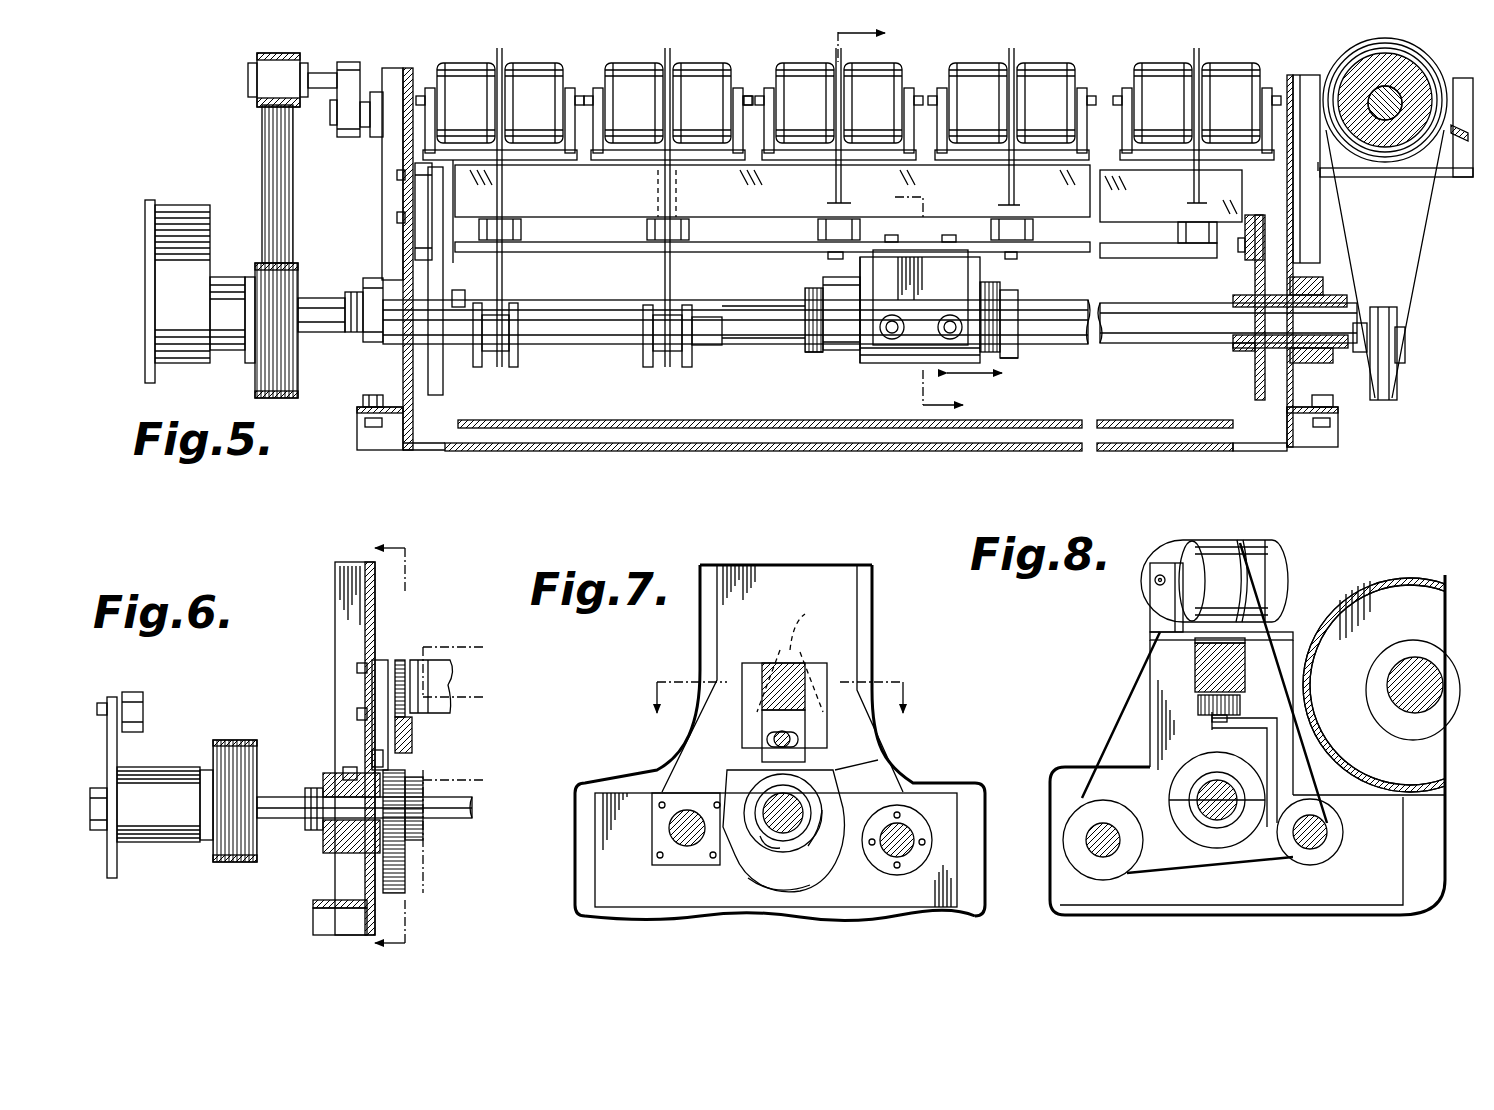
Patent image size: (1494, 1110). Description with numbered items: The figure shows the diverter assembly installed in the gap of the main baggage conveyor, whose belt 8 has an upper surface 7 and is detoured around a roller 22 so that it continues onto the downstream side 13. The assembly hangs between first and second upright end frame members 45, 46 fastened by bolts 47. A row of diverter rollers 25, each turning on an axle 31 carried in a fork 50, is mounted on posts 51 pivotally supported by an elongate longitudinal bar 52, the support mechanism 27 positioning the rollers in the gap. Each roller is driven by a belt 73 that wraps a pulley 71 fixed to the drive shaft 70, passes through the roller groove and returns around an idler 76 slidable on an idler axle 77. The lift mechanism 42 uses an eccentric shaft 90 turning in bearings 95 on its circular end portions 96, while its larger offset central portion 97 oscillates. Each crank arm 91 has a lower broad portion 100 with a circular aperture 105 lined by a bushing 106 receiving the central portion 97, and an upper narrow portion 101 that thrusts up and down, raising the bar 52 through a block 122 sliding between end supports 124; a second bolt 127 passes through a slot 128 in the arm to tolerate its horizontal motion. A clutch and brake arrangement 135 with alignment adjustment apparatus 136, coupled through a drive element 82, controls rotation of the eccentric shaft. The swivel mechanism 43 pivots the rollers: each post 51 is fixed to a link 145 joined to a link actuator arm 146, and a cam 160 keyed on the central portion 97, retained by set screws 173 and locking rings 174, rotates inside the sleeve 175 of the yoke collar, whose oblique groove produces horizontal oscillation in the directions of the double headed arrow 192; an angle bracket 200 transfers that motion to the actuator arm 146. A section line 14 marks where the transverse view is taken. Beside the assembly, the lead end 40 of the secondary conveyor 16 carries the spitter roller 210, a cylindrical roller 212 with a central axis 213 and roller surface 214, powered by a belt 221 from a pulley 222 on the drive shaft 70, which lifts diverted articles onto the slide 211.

In FIG. 6, the upper surface 7 is at (406, 752).
In FIG. 5, the belt 8 is at (572, 420).
In FIG. 8, the belt 8 is at (1408, 577).
In FIG. 7, the downstream side 13 is at (789, 682).
In FIG. 5, the section line 14- 14 is at (879, 222).
In FIG. 5, the secondary conveyor 16 is at (1424, 80).
In FIG. 8, the roller 22 is at (1400, 778).
In FIG. 5, the diverter roller 25 is at (552, 63).
In FIG. 8, the diverter roller 25 is at (1204, 540).
In FIG. 5, the support mechanism 27 is at (1126, 218).
In FIG. 8, the support mechanism 27 is at (1198, 701).
In FIG. 5, the axle 31 is at (741, 100).
In FIG. 8, the axle 31 is at (1155, 581).
In FIG. 5, the lead end 40 is at (1332, 73).
In FIG. 5, the lift mechanism 42 is at (1238, 279).
In FIG. 6, the lift mechanism 42 is at (432, 775).
In FIG. 7, the lift mechanism 42 is at (868, 762).
In FIG. 5, the swivel mechanism 43 is at (825, 369).
In FIG. 5, the first upright end frame member 45 is at (413, 408).
In FIG. 6, the first upright end frame member 45 is at (363, 878).
In FIG. 7, the first upright end frame member 45 is at (605, 898).
In FIG. 5, the second upright end frame member 46 is at (1284, 410).
In FIG. 8, the second upright end frame member 46 is at (1307, 898).
In FIG. 5, the bolts 47 is at (363, 400).
In FIG. 5, the fork 50 is at (978, 170).
In FIG. 8, the fork 50 is at (1150, 617).
In FIG. 5, the post 51 is at (658, 184).
In FIG. 8, the post 51 is at (1197, 643).
In FIG. 5, the longitudinal bar 52 is at (613, 205).
In FIG. 6, the longitudinal bar 52 is at (436, 668).
In FIG. 7, the longitudinal bar 52 is at (807, 668).
In FIG. 8, the longitudinal bar 52 is at (1197, 678).
In FIG. 5, the drive shaft 70 is at (1406, 359).
In FIG. 7, the drive shaft 70 is at (887, 857).
In FIG. 8, the drive shaft 70 is at (1120, 838).
In FIG. 8, the pulley 71 is at (1100, 870).
In FIG. 5, the belt 73 is at (672, 198).
In FIG. 8, the belt 73 is at (1127, 714).
In FIG. 5, the idler 76 is at (688, 356).
In FIG. 8, the idler 76 is at (1330, 865).
In FIG. 5, the idler axle 77 is at (570, 344).
In FIG. 7, the idler axle 77 is at (688, 847).
In FIG. 8, the idler axle 77 is at (1330, 843).
In FIG. 5, the gear 82 is at (262, 142).
In FIG. 6, the gear 82 is at (238, 740).
In FIG. 5, the eccentric shaft 90 is at (540, 302).
In FIG. 6, the eccentric shaft 90 is at (461, 832).
In FIG. 7, the eccentric shaft 90 is at (781, 836).
In FIG. 8, the eccentric shaft 90 is at (1203, 804).
In FIG. 5, the crank arm 91 is at (1255, 393).
In FIG. 6, the crank arm 91 is at (405, 883).
In FIG. 7, the crank arm 91 is at (727, 780).
In FIG. 5, the bearings 95 is at (1347, 294).
In FIG. 6, the bearings 95 is at (312, 787).
In FIG. 5, the end portions 96 is at (1337, 348).
In FIG. 6, the end portions 96 is at (296, 821).
In FIG. 7, the end portions 96 is at (800, 804).
In FIG. 5, the central portion 97 is at (779, 306).
In FIG. 7, the central portion 97 is at (804, 818).
In FIG. 7, the lower broad portion 100 is at (800, 880).
In FIG. 7, the upper narrow portion 101 is at (790, 657).
In FIG. 7, the circular aperture 105 is at (760, 837).
In FIG. 5, the bushing 106 is at (1252, 357).
In FIG. 7, the bushing 106 is at (823, 841).
In FIG. 6, the block 122 is at (377, 757).
In FIG. 7, the block 122 is at (770, 721).
In FIG. 5, the end supports 124 is at (415, 228).
In FIG. 6, the end supports 124 is at (378, 680).
In FIG. 7, the end supports 124 is at (745, 672).
In FIG. 6, the second bolt 127 is at (412, 733).
In FIG. 7, the second bolt 127 is at (777, 740).
In FIG. 7, the slot 128 is at (798, 742).
In FIG. 6, the clutch and brake arrangement 135 is at (182, 757).
In FIG. 5, the alignment adjustment apparatus 136 is at (359, 53).
In FIG. 5, the link 145 is at (816, 229).
In FIG. 8, the link 145 is at (1208, 721).
In FIG. 5, the link actuator arm 146 is at (1147, 256).
In FIG. 5, the cam 160 is at (830, 277).
In FIG. 8, the cam 160 is at (1227, 853).
In FIG. 5, the set screws 173 is at (812, 329).
In FIG. 5, the locking rings 174 is at (805, 342).
In FIG. 8, the locking rings 174 is at (1200, 774).
In FIG. 5, the cylindrical sleeve 175 is at (862, 363).
In FIG. 5, the double headed arrow 192 is at (986, 373).
In FIG. 5, the angle bracket 200 is at (960, 288).
In FIG. 8, the angle bracket 200 is at (1267, 741).
In FIG. 5, the spitter roller 210 is at (1373, 163).
In FIG. 5, the slide 211 is at (1464, 141).
In FIG. 5, the cylindrical roller 212 is at (1407, 145).
In FIG. 5, the central axis 213 is at (1402, 112).
In FIG. 5, the roller surface 214 is at (1356, 53).
In FIG. 5, the belt 221 is at (1423, 240).
In FIG. 5, the pulley 222 is at (1398, 328).